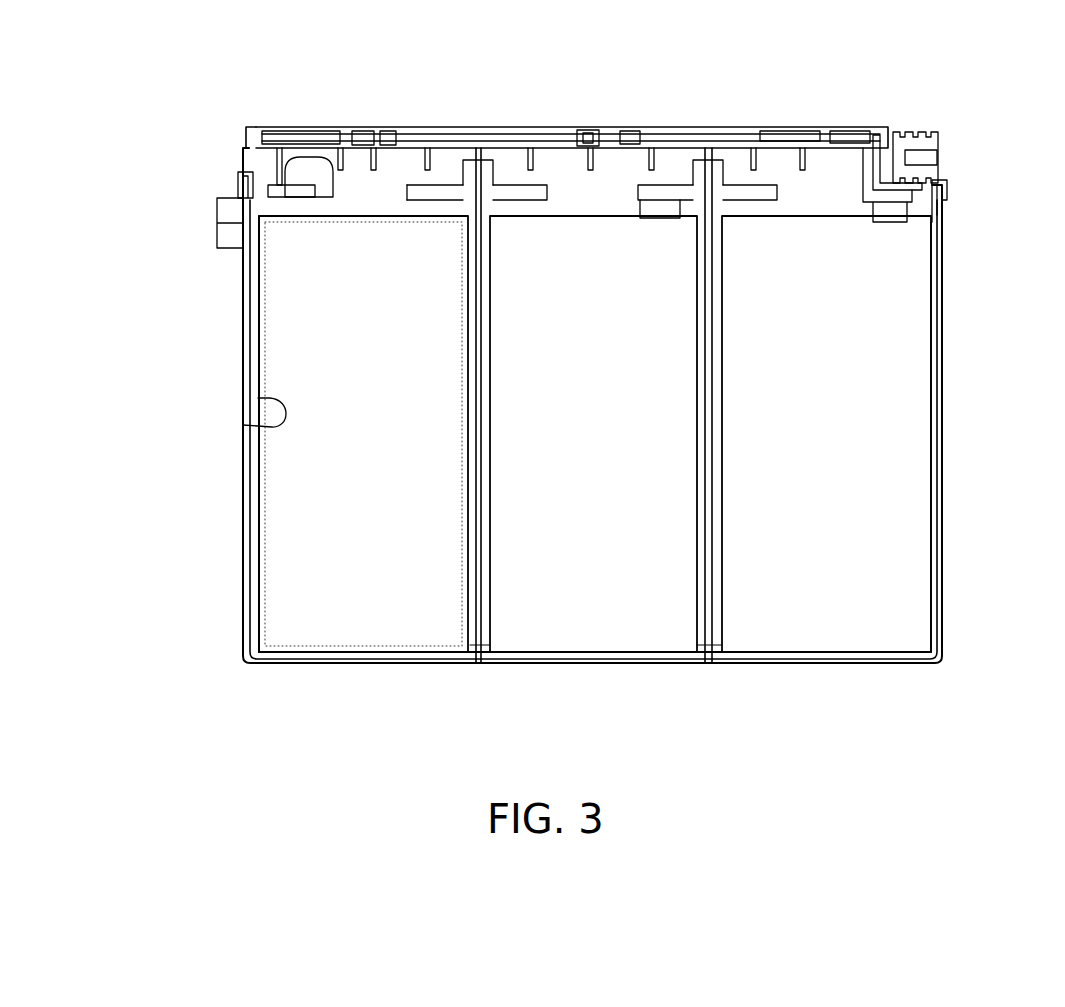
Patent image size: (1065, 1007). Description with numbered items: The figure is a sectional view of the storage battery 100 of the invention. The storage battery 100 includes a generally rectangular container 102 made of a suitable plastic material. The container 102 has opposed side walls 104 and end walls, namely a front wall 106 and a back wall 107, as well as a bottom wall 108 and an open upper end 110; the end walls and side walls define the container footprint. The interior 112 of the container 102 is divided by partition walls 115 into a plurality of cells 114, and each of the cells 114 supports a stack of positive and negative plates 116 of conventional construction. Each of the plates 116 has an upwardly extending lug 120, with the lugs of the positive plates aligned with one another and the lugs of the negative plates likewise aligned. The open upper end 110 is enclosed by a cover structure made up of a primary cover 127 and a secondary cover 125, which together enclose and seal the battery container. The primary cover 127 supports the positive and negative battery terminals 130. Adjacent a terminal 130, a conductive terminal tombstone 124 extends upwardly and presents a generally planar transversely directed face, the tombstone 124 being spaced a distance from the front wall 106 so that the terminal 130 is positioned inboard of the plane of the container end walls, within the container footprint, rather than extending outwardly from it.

The storage battery 100 is at (655, 58).
The container 102 is at (243, 320).
The side walls 104 is at (272, 637).
The front wall 106 is at (945, 628).
The back wall 107 is at (247, 553).
The bottom wall 108 is at (535, 664).
The open upper end 110 is at (265, 162).
The interior 112 is at (243, 425).
The cells 114 is at (577, 200).
The partition walls 115 is at (478, 212).
The positive and negative plates 116 is at (357, 235).
The lug 120 is at (430, 205).
The terminal tombstone 124 is at (870, 160).
The secondary cover 125 is at (703, 130).
The primary cover 127 is at (920, 148).
The battery terminals 130 is at (890, 178).